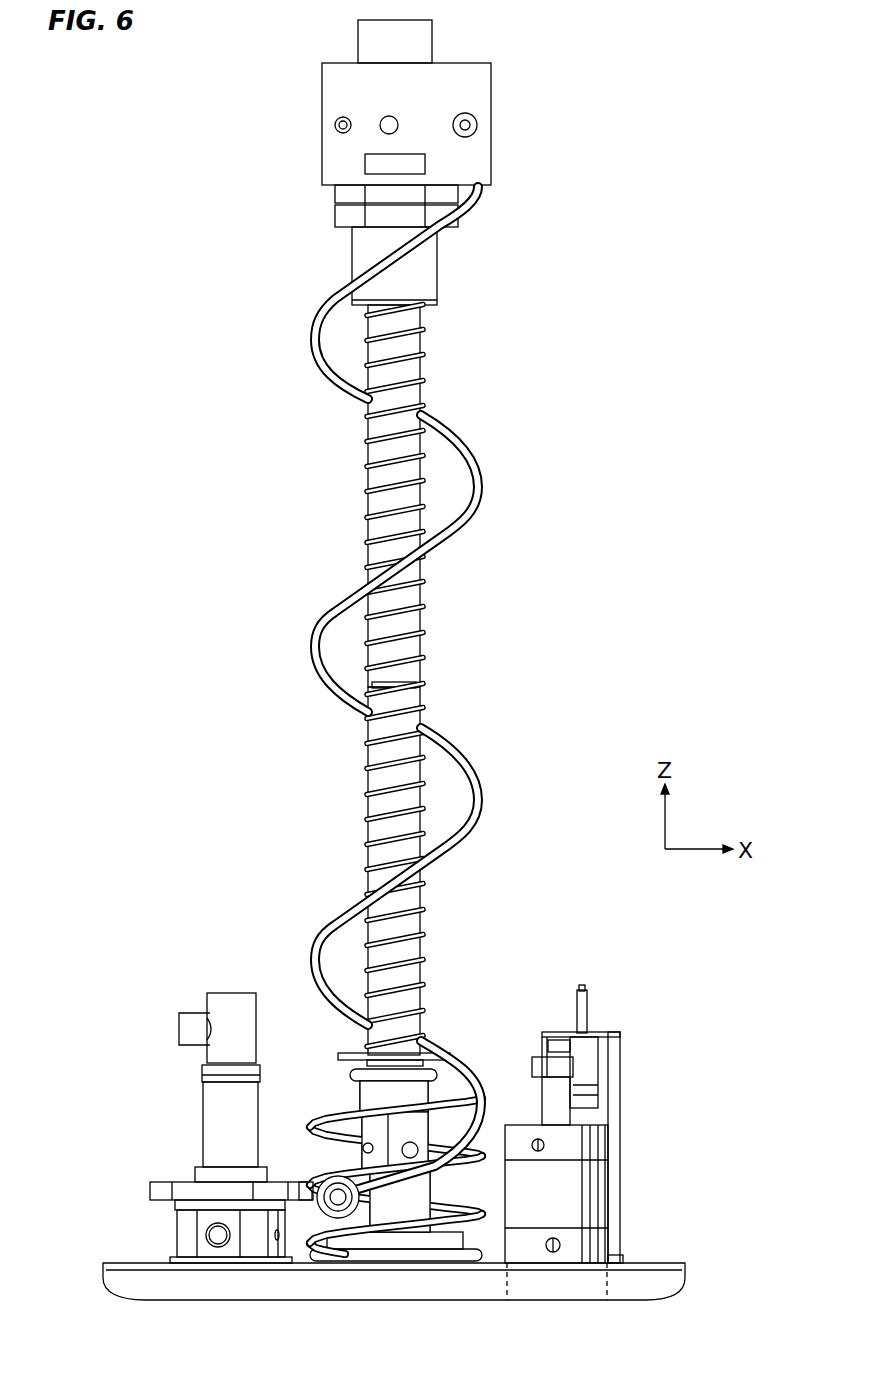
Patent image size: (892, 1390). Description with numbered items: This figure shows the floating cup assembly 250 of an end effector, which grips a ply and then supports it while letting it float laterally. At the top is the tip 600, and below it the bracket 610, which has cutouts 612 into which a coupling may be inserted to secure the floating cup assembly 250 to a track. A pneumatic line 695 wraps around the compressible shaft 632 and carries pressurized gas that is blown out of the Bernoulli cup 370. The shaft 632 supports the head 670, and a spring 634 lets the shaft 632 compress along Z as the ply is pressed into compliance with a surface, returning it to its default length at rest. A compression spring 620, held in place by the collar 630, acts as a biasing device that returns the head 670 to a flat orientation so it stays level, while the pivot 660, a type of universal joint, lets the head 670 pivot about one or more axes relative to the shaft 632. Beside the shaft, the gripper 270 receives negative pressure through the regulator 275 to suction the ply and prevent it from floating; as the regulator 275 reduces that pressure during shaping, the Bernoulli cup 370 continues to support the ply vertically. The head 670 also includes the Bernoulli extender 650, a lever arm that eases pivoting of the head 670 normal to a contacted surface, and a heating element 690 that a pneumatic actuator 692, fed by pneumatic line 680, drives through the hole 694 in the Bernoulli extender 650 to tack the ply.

The tip 600 is at (433, 33).
The bracket 610 is at (491, 89).
The cutouts 612 is at (478, 136).
The shaft 632 is at (410, 389).
The spring 634 is at (423, 631).
The pneumatic line 695 is at (312, 657).
The floating cup assembly 250 is at (657, 372).
The collar 630 is at (442, 1054).
The regulator 275 is at (229, 1000).
The gripper 270 is at (178, 1233).
The pivot 660 is at (362, 1167).
The Bernoulli cup 370 is at (428, 1242).
The compression spring 620 is at (362, 1117).
The Bernoulli extender 650 is at (657, 1263).
The hole 694 is at (507, 1278).
The pneumatic line 680 is at (590, 1011).
The pneumatic actuator 692 is at (608, 1090).
The heating element 690 is at (568, 1198).
The head 670 is at (738, 1020).